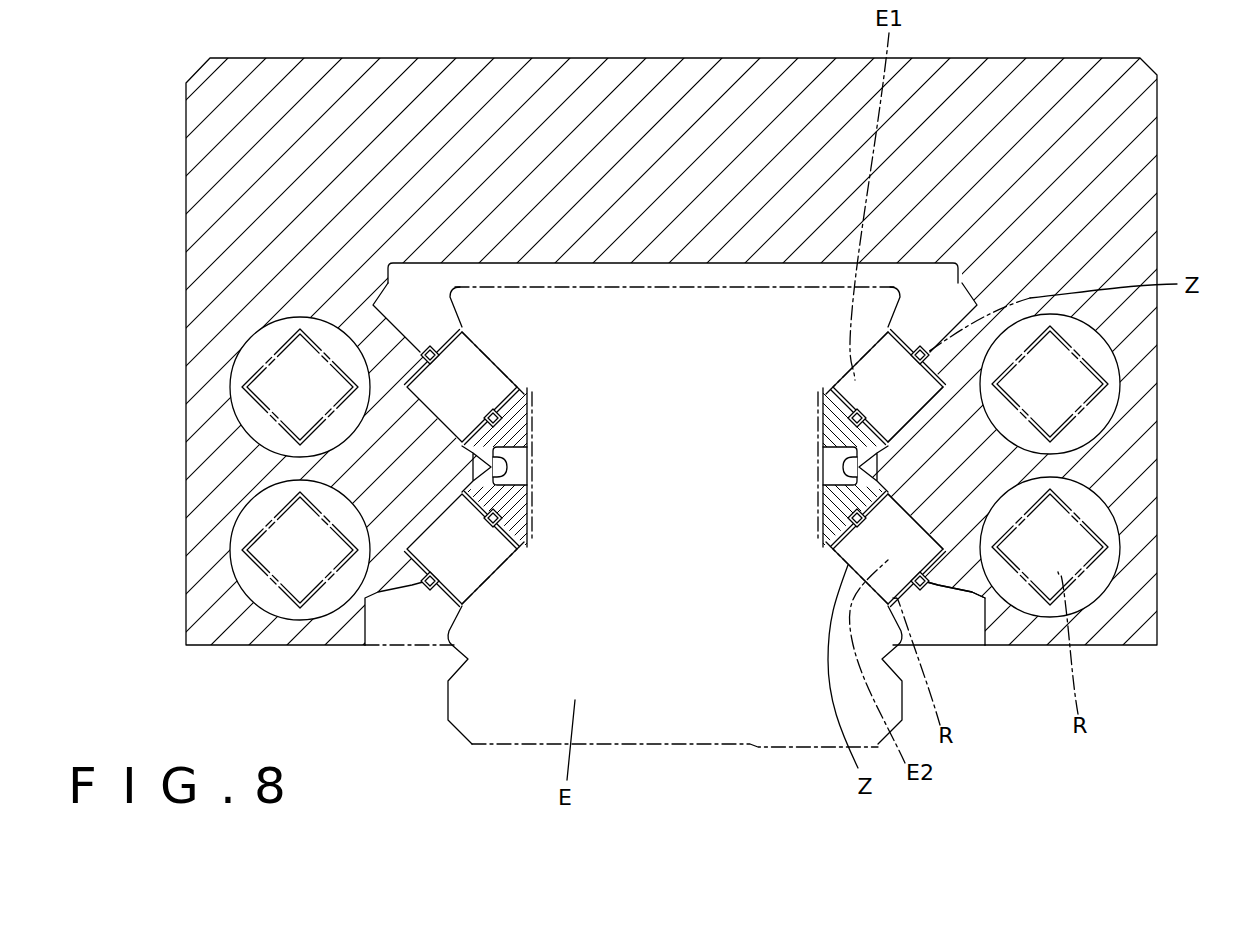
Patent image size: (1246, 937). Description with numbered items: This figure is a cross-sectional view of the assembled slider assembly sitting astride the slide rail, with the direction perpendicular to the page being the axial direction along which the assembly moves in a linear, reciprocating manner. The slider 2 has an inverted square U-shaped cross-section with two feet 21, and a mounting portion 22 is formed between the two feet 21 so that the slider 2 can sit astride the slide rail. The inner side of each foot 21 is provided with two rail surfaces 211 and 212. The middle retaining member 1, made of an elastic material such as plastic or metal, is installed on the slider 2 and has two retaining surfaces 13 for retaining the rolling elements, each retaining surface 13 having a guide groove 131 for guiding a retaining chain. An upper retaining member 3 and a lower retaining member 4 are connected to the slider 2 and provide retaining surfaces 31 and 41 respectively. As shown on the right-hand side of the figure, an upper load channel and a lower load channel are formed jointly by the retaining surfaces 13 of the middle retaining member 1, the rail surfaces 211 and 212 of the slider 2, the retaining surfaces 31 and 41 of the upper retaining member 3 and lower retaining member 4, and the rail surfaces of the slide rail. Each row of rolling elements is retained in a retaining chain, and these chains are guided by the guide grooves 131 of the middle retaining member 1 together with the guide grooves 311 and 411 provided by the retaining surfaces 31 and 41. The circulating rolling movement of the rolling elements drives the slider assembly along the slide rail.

The middle retaining member 1 is at (828, 503).
The slider 2 is at (1100, 105).
The upper retaining member 3 is at (415, 298).
The lower retaining member 4 is at (922, 612).
The retaining surface 13 is at (828, 440).
The foot 21 is at (212, 247).
The mounting portion 22 is at (577, 262).
The retaining surface 31 is at (925, 320).
The guide groove 131 is at (823, 437).
The rail surface 211 is at (940, 415).
The rail surface 212 is at (940, 510).
The guide groove 311 is at (930, 345).
The retaining surface 41 is at (922, 593).
The guide groove 411 is at (943, 610).